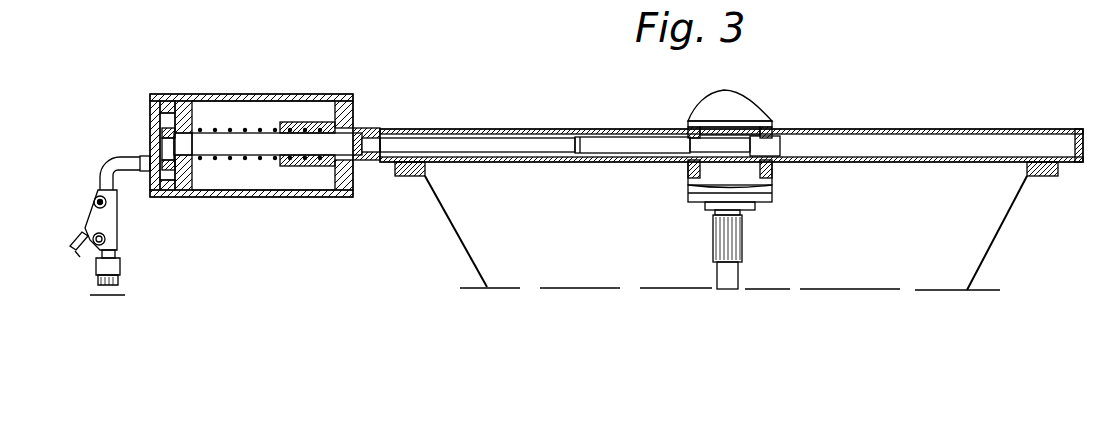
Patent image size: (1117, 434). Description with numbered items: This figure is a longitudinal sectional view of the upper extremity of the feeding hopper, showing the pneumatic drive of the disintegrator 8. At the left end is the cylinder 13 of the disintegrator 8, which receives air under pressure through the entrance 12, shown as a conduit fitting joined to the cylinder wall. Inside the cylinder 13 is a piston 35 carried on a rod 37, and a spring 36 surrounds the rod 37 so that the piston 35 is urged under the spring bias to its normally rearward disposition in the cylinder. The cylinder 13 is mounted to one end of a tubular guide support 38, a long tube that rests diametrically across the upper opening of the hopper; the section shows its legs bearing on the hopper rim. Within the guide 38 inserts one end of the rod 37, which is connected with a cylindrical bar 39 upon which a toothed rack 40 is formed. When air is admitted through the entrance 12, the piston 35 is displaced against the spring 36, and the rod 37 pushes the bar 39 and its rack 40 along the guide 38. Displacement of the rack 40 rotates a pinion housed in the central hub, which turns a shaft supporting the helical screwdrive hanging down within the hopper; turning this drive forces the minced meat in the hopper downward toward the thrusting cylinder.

The disintegrator 8 is at (745, 100).
The entrance 12 is at (108, 297).
The cylinder 13 is at (252, 197).
The piston 35 is at (192, 112).
The spring 36 is at (240, 130).
The rod 37 is at (313, 145).
The tubular guide support 38 is at (462, 129).
The cylindrical bar 39 is at (525, 145).
The toothed rack 40 is at (620, 145).